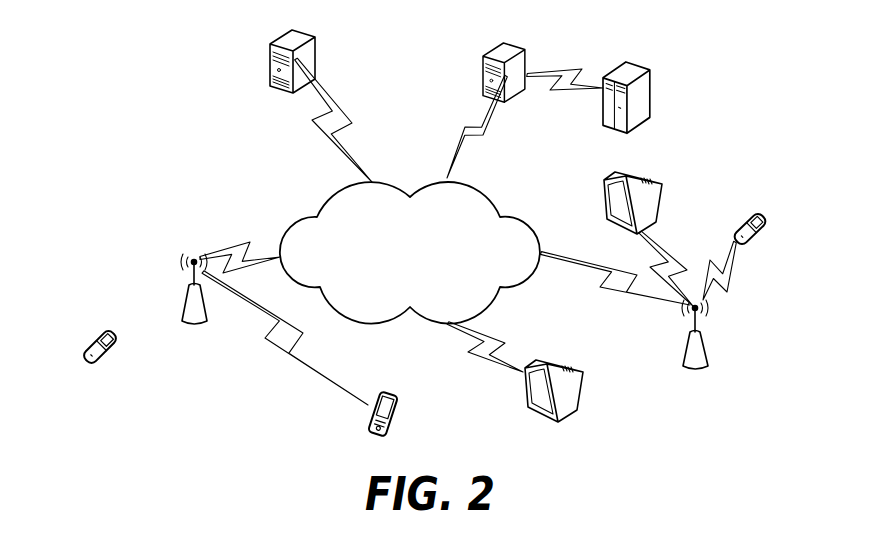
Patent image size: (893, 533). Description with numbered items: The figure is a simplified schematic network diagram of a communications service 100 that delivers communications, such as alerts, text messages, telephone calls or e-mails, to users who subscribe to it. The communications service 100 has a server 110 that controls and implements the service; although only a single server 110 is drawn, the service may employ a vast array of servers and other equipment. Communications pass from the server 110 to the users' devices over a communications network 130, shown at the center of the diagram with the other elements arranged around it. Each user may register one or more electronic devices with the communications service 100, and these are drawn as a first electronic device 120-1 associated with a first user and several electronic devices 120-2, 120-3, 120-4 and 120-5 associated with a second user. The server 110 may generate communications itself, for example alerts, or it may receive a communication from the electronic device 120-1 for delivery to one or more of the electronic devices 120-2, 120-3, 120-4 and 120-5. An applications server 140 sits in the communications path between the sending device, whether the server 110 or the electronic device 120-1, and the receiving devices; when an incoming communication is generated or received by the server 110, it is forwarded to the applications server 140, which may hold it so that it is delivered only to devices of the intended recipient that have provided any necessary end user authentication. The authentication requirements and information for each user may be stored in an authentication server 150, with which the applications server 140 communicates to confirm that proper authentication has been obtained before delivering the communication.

The communications service 100 is at (133, 134).
The server 110 is at (270, 66).
The electronic device 120-1 is at (89, 362).
The electronic device 120-2 is at (371, 410).
The electronic device 120-3 is at (764, 236).
The electronic device 120-4 is at (577, 409).
The electronic device 120-5 is at (611, 173).
The communications network 130 is at (424, 273).
The applications server 140 is at (483, 80).
The authentication server 150 is at (650, 80).